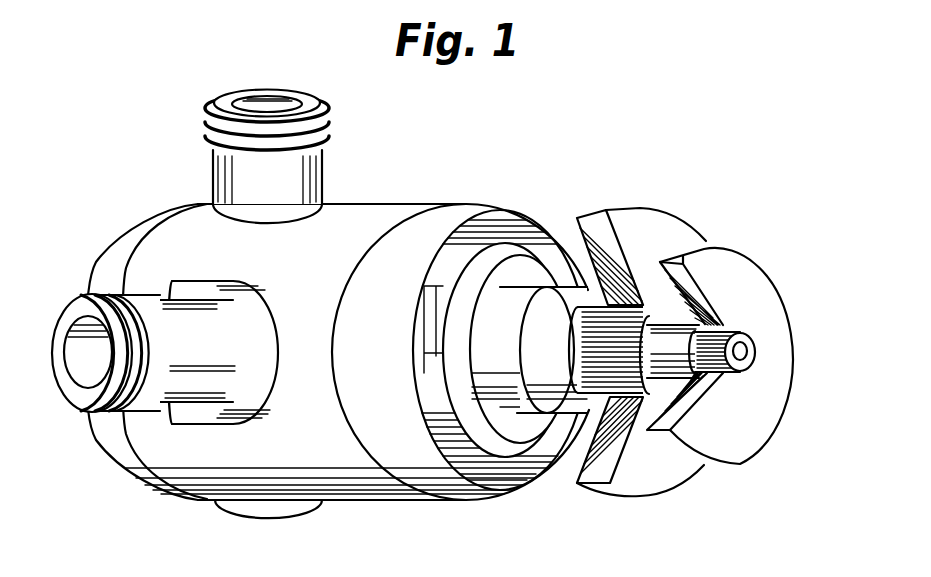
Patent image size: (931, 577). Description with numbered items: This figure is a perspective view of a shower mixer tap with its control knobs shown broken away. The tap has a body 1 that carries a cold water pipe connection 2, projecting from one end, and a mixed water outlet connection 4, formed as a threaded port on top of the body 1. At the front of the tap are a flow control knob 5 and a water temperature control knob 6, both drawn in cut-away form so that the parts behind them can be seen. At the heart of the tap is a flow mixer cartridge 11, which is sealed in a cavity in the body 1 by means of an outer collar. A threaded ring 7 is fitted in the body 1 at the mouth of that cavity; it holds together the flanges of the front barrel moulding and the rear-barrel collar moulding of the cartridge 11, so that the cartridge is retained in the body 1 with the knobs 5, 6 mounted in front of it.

The body 1 is at (381, 205).
The cold water pipe connection 2 is at (85, 357).
The mixed water outlet connection 4 is at (267, 103).
The flow control knob 5 is at (653, 223).
The water temperature control knob 6 is at (742, 262).
The threaded ring 7 is at (522, 250).
The flow mixer cartridge 11 is at (522, 297).